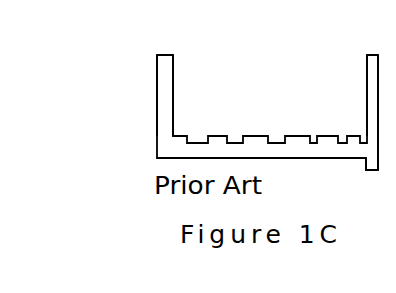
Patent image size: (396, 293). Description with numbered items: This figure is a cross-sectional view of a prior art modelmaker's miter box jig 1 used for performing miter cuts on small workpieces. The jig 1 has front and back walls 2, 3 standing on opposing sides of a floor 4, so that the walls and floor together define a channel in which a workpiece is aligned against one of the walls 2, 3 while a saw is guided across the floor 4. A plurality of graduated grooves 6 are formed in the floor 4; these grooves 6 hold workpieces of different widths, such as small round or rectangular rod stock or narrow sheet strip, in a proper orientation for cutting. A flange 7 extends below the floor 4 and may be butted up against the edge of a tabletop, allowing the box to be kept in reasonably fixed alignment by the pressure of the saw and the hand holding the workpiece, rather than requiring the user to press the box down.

The jig 1 is at (137, 80).
The front wall 2 is at (367, 65).
The back wall 3 is at (173, 70).
The floor 4 is at (253, 137).
The graduated grooves 6 is at (198, 143).
The flange 7 is at (366, 162).